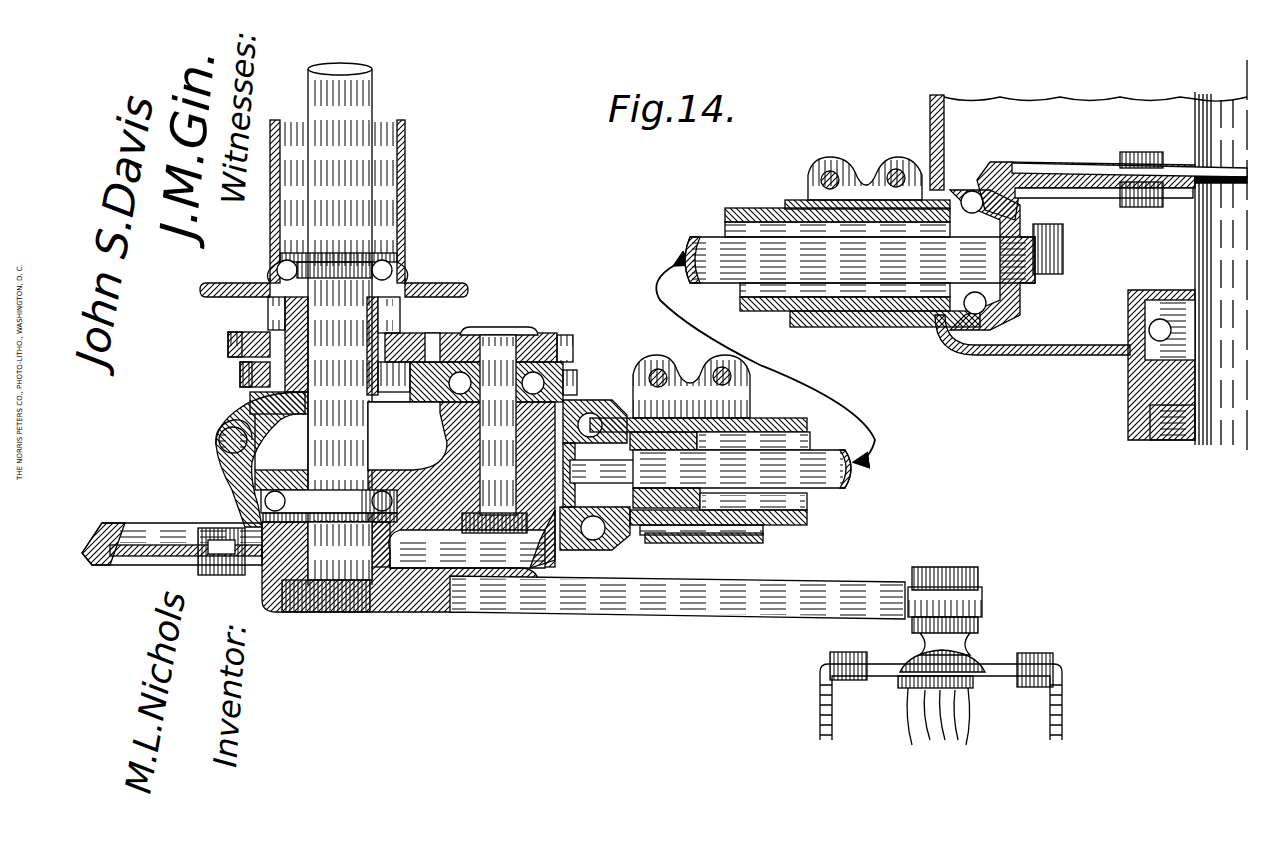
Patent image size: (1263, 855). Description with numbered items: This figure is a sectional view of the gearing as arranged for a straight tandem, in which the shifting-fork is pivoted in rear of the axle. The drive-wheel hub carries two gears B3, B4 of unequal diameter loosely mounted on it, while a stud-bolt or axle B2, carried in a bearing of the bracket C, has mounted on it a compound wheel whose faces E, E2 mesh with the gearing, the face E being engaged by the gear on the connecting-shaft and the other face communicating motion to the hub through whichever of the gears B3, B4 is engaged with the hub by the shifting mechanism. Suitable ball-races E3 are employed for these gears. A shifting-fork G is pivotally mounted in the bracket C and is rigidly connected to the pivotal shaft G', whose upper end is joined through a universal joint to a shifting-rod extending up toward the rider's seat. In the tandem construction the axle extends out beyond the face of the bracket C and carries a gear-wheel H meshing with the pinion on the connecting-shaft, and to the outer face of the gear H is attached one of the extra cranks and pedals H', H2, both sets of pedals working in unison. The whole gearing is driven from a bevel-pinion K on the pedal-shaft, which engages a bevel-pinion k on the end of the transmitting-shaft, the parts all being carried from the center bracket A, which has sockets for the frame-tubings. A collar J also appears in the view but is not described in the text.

The gear B3 is at (228, 340).
The gear B4 is at (240, 375).
The stud-bolt or axle B2 is at (499, 430).
The ball-race E3 is at (493, 362).
The gear face E2 is at (669, 386).
The gear E is at (595, 464).
The bracket C is at (461, 485).
The shifting-fork G is at (279, 441).
The pivotal shaft G' is at (240, 459).
The collar J is at (262, 512).
The gear-wheel H is at (172, 563).
The crank H' is at (717, 619).
The pedal H2 is at (917, 698).
The bevel-pinion K is at (1112, 179).
The bevel-pinion k is at (1014, 300).
The center bracket A is at (1065, 365).